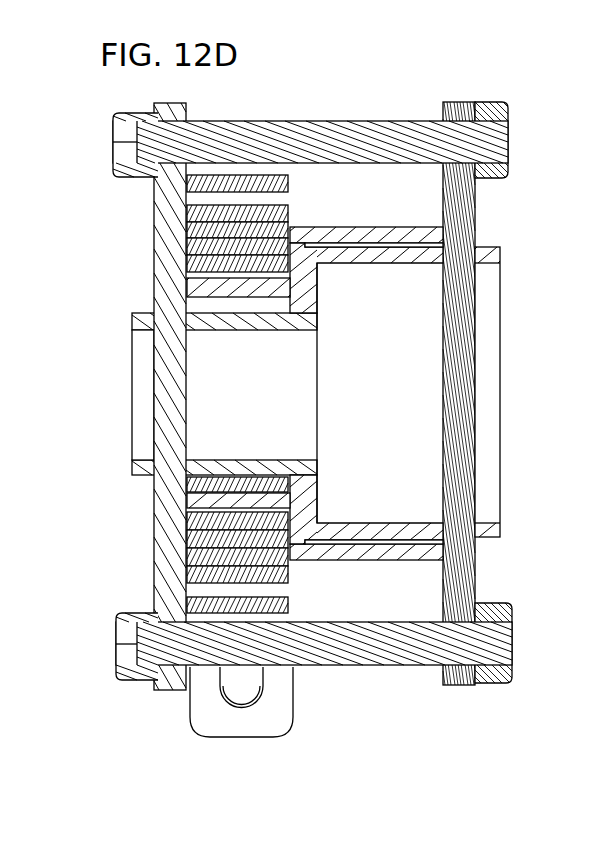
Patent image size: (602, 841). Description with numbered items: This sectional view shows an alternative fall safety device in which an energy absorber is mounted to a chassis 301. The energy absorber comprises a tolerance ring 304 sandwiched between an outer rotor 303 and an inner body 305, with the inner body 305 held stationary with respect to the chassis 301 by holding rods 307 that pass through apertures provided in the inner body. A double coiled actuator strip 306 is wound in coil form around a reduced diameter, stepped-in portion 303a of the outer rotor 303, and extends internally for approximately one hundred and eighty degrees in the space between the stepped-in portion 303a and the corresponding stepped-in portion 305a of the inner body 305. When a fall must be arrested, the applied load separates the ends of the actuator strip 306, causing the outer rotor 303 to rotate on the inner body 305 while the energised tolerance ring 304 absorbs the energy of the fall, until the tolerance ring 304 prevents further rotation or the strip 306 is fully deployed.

The chassis 301 is at (367, 85).
The outer rotor 303 is at (413, 227).
The stepped-in portion of the outer rotor 303a is at (213, 282).
The tolerance ring 304 is at (368, 243).
The inner body 305 is at (490, 254).
The stepped-in portion of the inner body 305a is at (222, 461).
The double coiled actuator strip 306 is at (202, 222).
The holding rods 307 is at (163, 393).